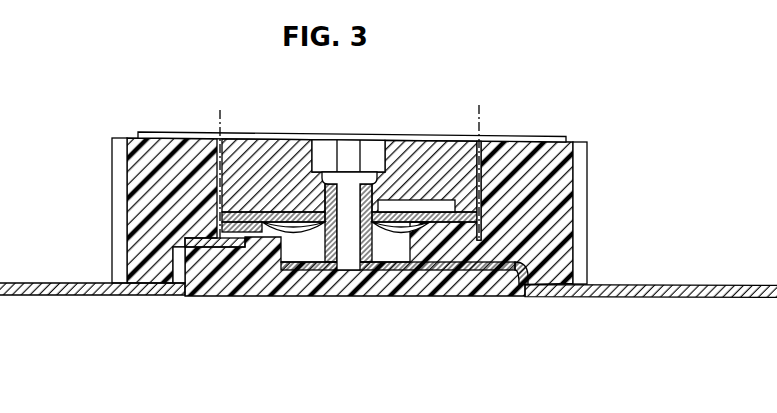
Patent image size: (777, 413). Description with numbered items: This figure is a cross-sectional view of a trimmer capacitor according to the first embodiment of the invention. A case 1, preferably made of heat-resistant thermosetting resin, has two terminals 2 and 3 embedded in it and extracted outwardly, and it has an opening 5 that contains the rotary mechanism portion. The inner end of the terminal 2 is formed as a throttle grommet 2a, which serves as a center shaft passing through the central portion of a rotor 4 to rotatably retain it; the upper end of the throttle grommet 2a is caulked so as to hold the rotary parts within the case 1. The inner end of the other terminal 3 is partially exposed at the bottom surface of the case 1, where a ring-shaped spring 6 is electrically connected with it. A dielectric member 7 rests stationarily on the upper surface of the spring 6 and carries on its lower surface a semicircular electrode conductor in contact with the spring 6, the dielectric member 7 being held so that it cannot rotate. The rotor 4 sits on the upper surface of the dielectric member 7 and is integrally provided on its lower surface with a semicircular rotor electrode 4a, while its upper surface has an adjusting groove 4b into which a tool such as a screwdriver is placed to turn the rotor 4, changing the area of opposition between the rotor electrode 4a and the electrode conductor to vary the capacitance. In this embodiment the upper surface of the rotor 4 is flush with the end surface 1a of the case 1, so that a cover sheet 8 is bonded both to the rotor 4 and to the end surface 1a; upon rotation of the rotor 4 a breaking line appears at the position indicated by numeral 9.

The case 1 is at (601, 143).
The end surface of case 1a is at (138, 135).
The terminal 2 is at (627, 286).
The throttle grommet 2a is at (376, 172).
The terminal 3 is at (83, 283).
The rotor 4 is at (236, 175).
The rotor electrode 4a is at (240, 208).
The adjusting groove 4b is at (345, 148).
The opening 5 is at (478, 175).
The spring 6 is at (230, 228).
The dielectric member 7 is at (480, 215).
The cover sheet 8 is at (166, 134).
The breaking line position 9 is at (218, 118).